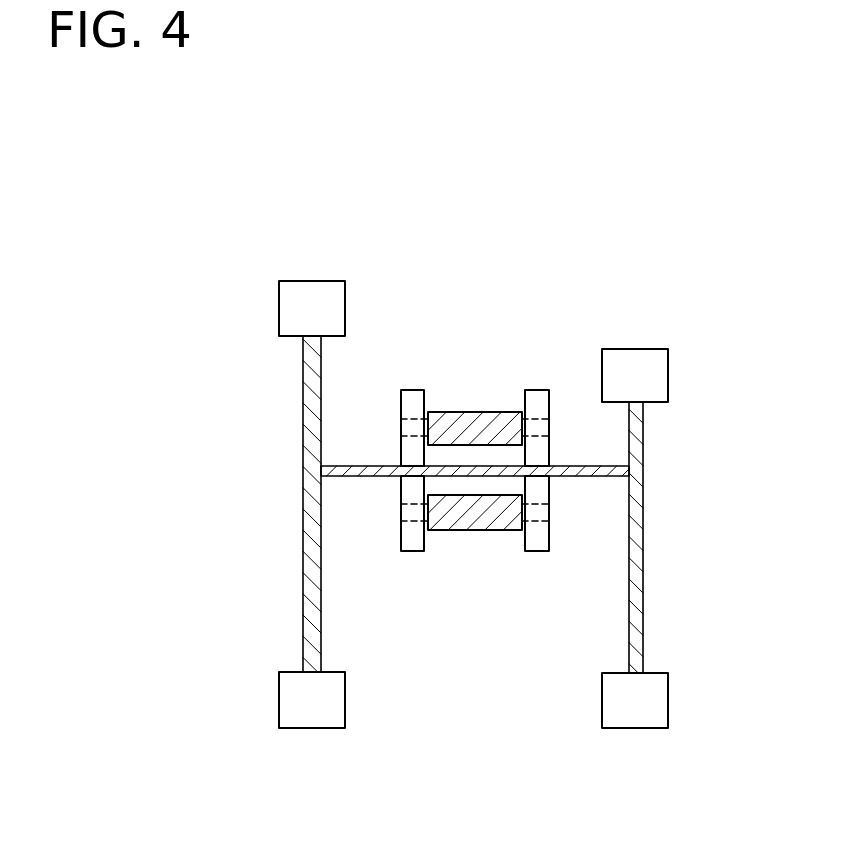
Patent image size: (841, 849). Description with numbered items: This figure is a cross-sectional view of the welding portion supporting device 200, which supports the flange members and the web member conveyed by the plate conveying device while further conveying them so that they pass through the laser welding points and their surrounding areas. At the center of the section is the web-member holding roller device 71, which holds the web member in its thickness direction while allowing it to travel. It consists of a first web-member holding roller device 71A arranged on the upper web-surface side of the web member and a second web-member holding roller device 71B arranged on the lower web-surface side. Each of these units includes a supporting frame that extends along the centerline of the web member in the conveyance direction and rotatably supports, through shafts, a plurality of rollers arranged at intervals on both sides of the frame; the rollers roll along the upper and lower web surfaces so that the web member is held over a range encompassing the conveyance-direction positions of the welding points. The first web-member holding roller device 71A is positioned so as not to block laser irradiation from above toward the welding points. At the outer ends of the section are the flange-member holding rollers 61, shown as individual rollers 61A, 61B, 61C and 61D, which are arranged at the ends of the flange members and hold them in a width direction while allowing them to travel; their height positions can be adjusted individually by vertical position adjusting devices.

The welding portion supporting device 200 is at (292, 207).
The flange-member holding rollers 61 is at (474, 542).
The flange-member holding roller 61A is at (291, 308).
The flange-member holding roller 61B is at (307, 718).
The flange-member holding roller 61C is at (663, 385).
The flange-member holding roller 61D is at (632, 718).
The web-member holding roller device 71 is at (475, 474).
The first web-member holding roller device 71A is at (477, 420).
The second web-member holding roller device 71B is at (477, 520).